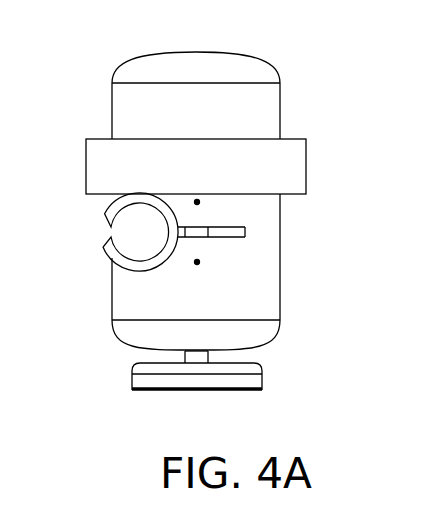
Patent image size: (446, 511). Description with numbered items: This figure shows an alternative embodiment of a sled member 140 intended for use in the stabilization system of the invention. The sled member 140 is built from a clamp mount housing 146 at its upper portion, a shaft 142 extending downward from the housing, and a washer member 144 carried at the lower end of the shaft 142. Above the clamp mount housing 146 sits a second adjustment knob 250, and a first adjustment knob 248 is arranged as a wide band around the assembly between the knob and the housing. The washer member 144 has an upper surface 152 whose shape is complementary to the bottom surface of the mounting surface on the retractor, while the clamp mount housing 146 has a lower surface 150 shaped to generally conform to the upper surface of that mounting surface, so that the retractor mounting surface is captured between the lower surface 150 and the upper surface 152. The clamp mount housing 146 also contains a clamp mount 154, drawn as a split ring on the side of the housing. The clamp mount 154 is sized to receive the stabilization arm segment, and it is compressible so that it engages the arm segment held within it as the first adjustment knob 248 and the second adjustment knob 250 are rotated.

The sled member 140 is at (343, 53).
The second adjustment knob 250 is at (268, 110).
The first adjustment knob 248 is at (307, 156).
The clamp mount 154 is at (100, 219).
The clamp mount housing 146 is at (270, 290).
The lower surface 150 is at (262, 330).
The shaft 142 is at (185, 357).
The upper surface 152 is at (243, 356).
The washer member 144 is at (243, 376).